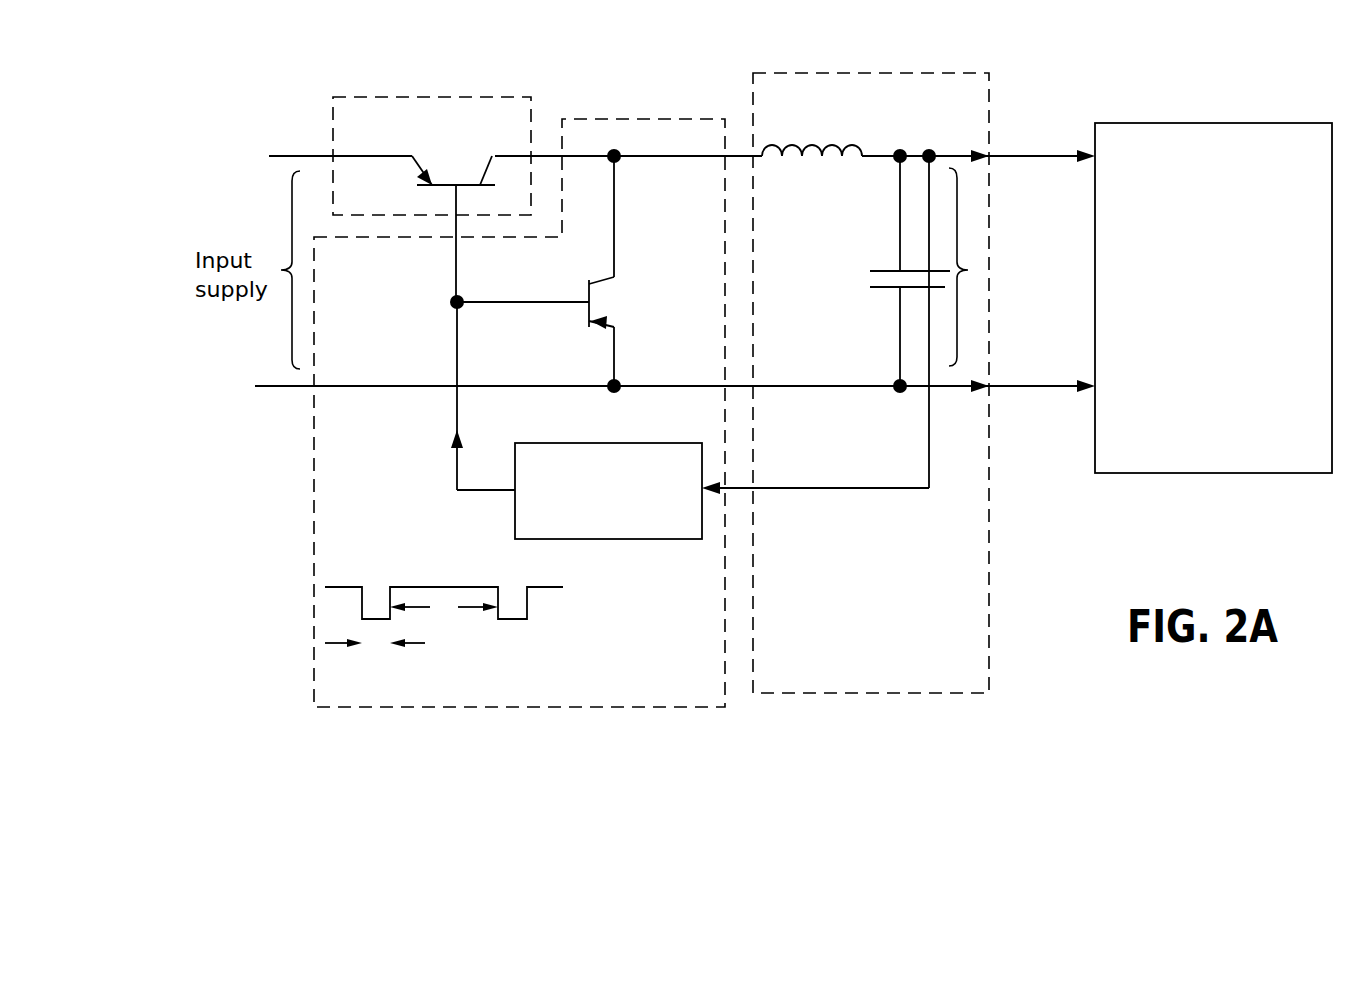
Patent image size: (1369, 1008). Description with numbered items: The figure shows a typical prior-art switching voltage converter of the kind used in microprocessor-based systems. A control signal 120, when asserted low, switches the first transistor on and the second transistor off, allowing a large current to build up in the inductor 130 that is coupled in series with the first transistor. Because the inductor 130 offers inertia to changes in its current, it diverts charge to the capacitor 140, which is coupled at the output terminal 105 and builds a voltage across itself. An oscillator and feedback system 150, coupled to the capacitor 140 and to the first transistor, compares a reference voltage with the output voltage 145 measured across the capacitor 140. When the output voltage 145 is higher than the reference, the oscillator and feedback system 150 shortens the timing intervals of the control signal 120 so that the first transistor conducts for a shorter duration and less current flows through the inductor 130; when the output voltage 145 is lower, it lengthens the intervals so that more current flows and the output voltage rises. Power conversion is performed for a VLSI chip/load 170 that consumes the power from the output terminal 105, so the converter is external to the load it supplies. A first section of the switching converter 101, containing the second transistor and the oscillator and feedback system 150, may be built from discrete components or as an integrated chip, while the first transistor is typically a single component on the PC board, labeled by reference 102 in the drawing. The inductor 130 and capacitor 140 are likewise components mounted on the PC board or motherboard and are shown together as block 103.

The first section of the switching converter 101 is at (510, 526).
The switching transistor T1 (single component on PC board) 102 is at (322, 170).
The block of components mounted on the PC board 103 is at (938, 475).
The output terminal 105 is at (1019, 113).
The control signal 120 is at (430, 463).
The inductor 130 is at (847, 126).
The capacitor 140 is at (864, 271).
The output voltage 145 is at (968, 270).
The oscillator and feedback system 150 is at (687, 530).
The VLSI chip/load 170 is at (1235, 445).